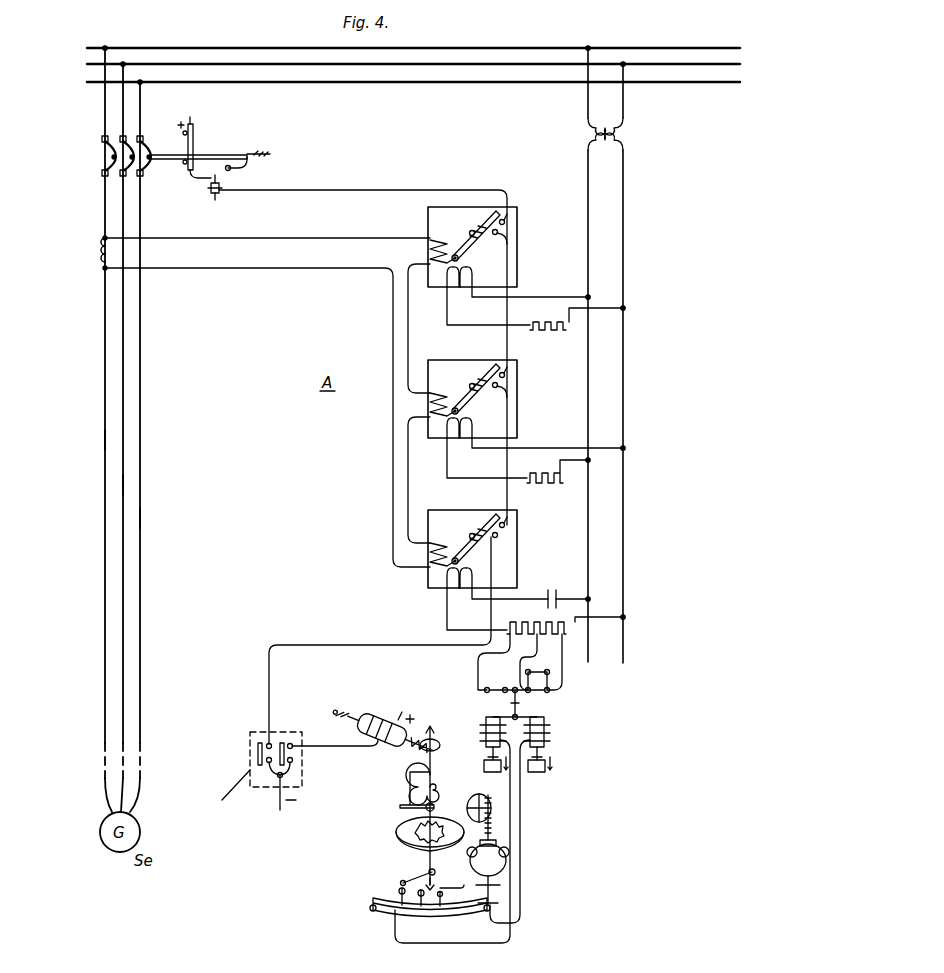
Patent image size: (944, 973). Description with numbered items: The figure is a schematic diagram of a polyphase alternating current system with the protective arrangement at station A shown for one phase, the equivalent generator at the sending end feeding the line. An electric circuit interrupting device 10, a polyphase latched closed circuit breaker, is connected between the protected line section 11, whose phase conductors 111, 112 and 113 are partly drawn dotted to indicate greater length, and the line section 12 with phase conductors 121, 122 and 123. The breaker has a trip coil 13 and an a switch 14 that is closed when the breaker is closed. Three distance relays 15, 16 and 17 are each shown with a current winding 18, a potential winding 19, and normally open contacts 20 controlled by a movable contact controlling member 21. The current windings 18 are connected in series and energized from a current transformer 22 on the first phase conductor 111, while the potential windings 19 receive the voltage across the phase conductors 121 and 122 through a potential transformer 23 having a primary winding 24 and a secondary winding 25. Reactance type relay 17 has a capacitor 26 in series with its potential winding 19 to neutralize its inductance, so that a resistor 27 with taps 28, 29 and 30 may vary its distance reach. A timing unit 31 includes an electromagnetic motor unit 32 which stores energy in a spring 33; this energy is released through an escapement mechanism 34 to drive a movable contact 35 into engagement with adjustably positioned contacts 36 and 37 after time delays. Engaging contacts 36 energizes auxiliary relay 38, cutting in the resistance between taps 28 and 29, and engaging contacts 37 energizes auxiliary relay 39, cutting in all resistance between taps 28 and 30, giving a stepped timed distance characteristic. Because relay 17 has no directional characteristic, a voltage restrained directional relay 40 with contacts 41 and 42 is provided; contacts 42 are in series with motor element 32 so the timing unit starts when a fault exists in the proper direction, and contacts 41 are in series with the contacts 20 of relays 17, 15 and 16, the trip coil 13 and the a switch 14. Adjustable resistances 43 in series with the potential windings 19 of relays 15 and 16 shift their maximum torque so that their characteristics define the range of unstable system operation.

The electric circuit interrupting device 10 is at (105, 150).
The line section 11 is at (140, 313).
The phase conductor 111 is at (105, 443).
The phase conductor 112 is at (123, 486).
The phase conductor 113 is at (140, 519).
The line section 12 is at (264, 82).
The phase conductor 121 is at (428, 48).
The phase conductor 122 is at (465, 64).
The phase conductor 123 is at (508, 82).
The trip coil 13 is at (215, 200).
The a switch 14 is at (194, 150).
The distance relay 15 is at (517, 220).
The distance relay 16 is at (517, 375).
The distance relay 17 is at (517, 525).
The current winding 18 is at (428, 252).
The potential winding 19 is at (463, 287).
The contacts 20 is at (508, 226).
The movable contact controlling member 21 is at (478, 222).
The current transformer 22 is at (100, 245).
The potential transformer 23 is at (619, 363).
The primary winding 24 is at (600, 122).
The secondary winding 25 is at (609, 148).
The capacitor 26 is at (553, 590).
The resistor 27 is at (532, 622).
The tap 28 is at (505, 640).
The tap 29 is at (537, 640).
The tap 30 is at (559, 640).
The timing unit 31 is at (468, 803).
The electromagnetic motor unit 32 is at (388, 720).
The spring 33 is at (434, 785).
The escapement mechanism 34 is at (456, 840).
The movable contact 35 is at (402, 882).
The contacts 36 is at (399, 890).
The contacts 37 is at (448, 897).
The auxiliary relay 38 is at (484, 728).
The auxiliary relay 39 is at (545, 728).
The directional relay 40 is at (250, 736).
The contacts 41 is at (272, 743).
The contacts 42 is at (293, 744).
The adjustable resistances 43 is at (556, 331).